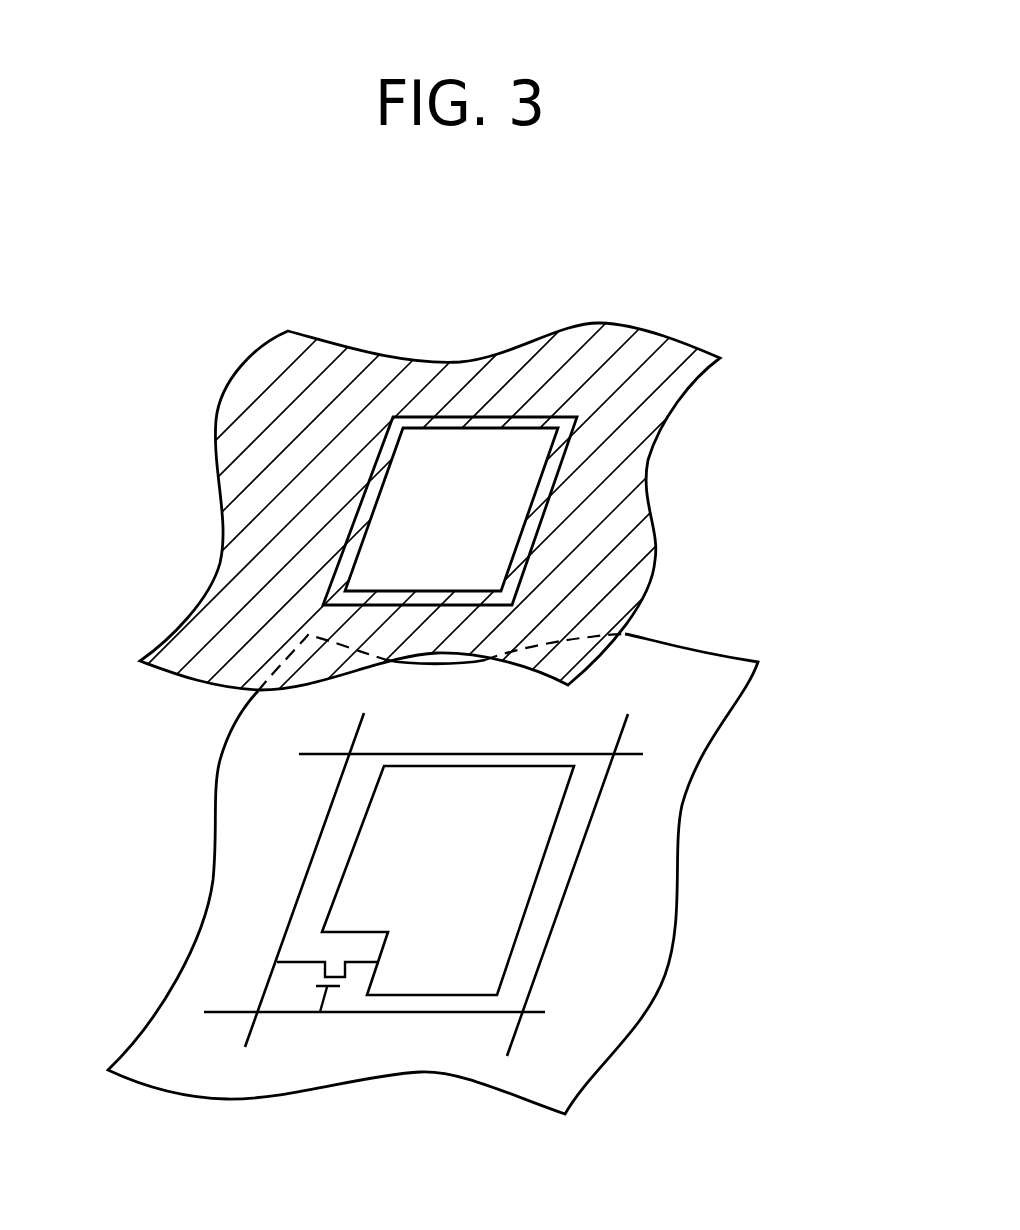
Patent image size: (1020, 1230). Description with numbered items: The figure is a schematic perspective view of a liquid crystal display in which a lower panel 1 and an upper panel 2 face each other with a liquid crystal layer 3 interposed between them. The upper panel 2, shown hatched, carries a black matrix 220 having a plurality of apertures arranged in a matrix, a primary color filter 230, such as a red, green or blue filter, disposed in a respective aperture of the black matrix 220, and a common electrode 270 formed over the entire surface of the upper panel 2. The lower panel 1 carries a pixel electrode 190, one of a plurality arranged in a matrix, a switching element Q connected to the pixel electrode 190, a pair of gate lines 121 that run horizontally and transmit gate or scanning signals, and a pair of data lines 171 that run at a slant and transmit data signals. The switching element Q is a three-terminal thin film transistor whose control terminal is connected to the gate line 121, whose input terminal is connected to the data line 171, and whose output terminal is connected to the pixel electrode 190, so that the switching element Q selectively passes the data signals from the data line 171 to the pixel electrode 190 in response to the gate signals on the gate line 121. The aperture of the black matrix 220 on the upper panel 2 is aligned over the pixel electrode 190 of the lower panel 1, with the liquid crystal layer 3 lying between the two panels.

The lower panel 1 is at (700, 831).
The upper panel 2 is at (676, 560).
The liquid crystal layer 3 is at (119, 766).
The gate line 121 is at (475, 753).
The data line 171 is at (325, 823).
The pixel electrode 190 is at (511, 948).
The black matrix 220 is at (454, 427).
The color filter 230 is at (549, 497).
The common electrode 270 is at (648, 445).
The switching element Q is at (327, 971).